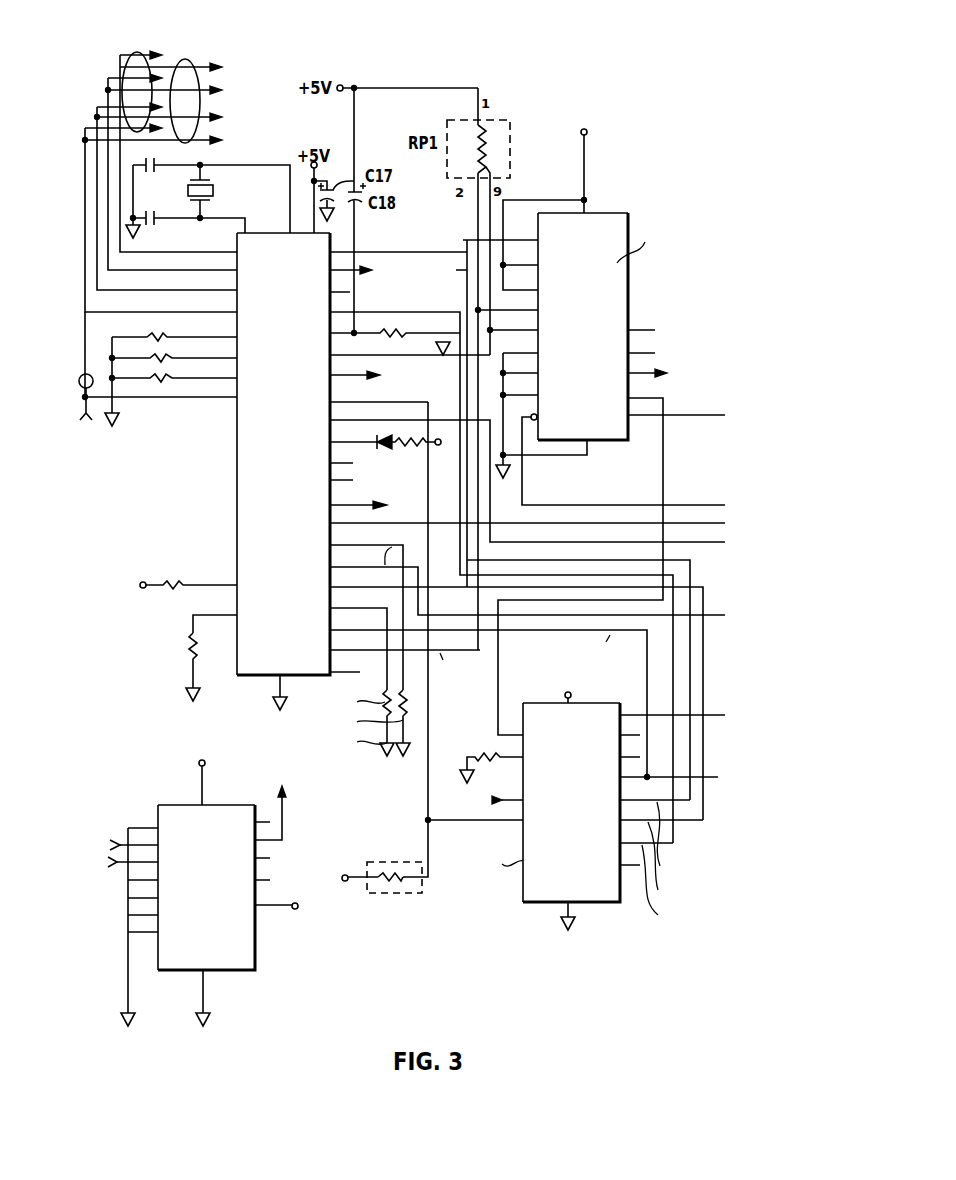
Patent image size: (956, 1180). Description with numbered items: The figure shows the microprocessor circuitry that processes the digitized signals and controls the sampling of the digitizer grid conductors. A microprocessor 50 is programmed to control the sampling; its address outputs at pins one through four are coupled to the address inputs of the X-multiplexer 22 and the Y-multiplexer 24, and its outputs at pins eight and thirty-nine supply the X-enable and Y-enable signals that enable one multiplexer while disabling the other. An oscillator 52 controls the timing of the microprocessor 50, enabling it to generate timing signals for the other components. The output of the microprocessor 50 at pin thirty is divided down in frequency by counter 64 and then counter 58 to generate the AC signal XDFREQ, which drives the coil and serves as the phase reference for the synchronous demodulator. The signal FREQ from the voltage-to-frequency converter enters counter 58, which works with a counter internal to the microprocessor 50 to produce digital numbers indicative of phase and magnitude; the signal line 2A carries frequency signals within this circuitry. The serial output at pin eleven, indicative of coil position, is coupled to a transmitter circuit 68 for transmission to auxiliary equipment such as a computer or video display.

The X-multiplexer 22 is at (138, 50).
The Y-multiplexer 24 is at (188, 64).
The microprocessor 50 is at (292, 146).
The oscillator 52 is at (222, 150).
The counter 64 is at (632, 148).
The counter 58 is at (498, 886).
The transmitter circuit 68 is at (257, 985).
The frequency signal line 2A is at (428, 728).